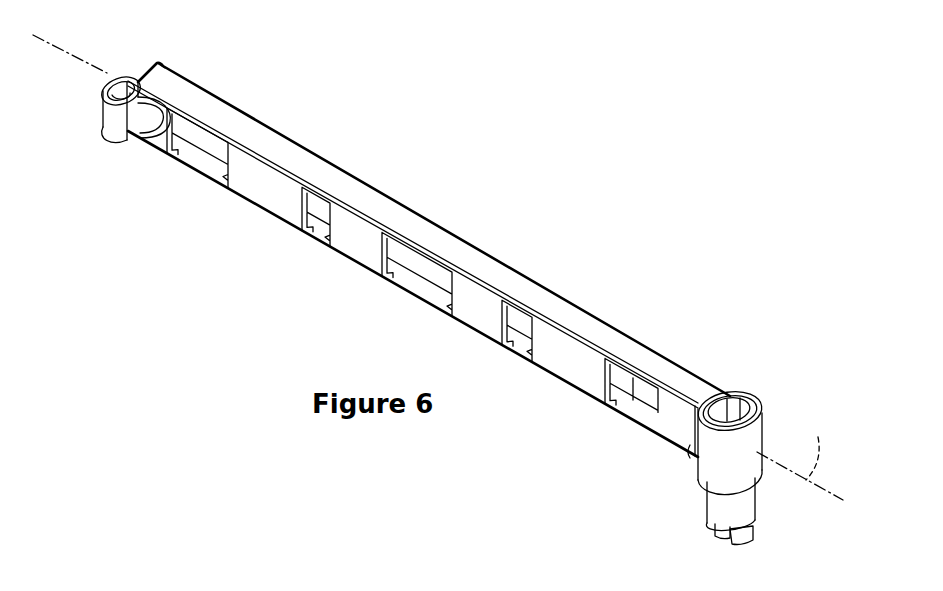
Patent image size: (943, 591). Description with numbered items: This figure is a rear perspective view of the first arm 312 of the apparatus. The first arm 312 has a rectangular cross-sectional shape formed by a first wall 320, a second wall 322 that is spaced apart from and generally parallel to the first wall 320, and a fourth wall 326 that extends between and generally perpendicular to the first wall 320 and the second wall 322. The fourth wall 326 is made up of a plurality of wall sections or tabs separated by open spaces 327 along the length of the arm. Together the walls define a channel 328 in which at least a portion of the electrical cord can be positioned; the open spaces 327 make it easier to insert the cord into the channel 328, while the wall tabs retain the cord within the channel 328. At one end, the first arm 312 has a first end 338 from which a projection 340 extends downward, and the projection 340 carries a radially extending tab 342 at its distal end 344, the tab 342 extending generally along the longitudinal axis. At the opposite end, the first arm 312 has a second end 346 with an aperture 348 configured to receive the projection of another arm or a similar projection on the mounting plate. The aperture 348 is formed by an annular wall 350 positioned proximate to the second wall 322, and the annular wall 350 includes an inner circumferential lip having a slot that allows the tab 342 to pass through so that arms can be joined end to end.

The first arm 312 is at (438, 296).
The first wall 320 is at (517, 280).
The second wall 322 is at (432, 292).
The fourth wall 326 is at (578, 372).
The open spaces 327 is at (185, 165).
The channel 328 is at (633, 412).
The first end 338 is at (776, 416).
The projection 340 is at (742, 498).
The radially extending tab 342 is at (740, 538).
The distal end 344 is at (718, 530).
The second end 346 is at (152, 45).
The aperture 348 is at (112, 70).
The annular wall 350 is at (112, 117).